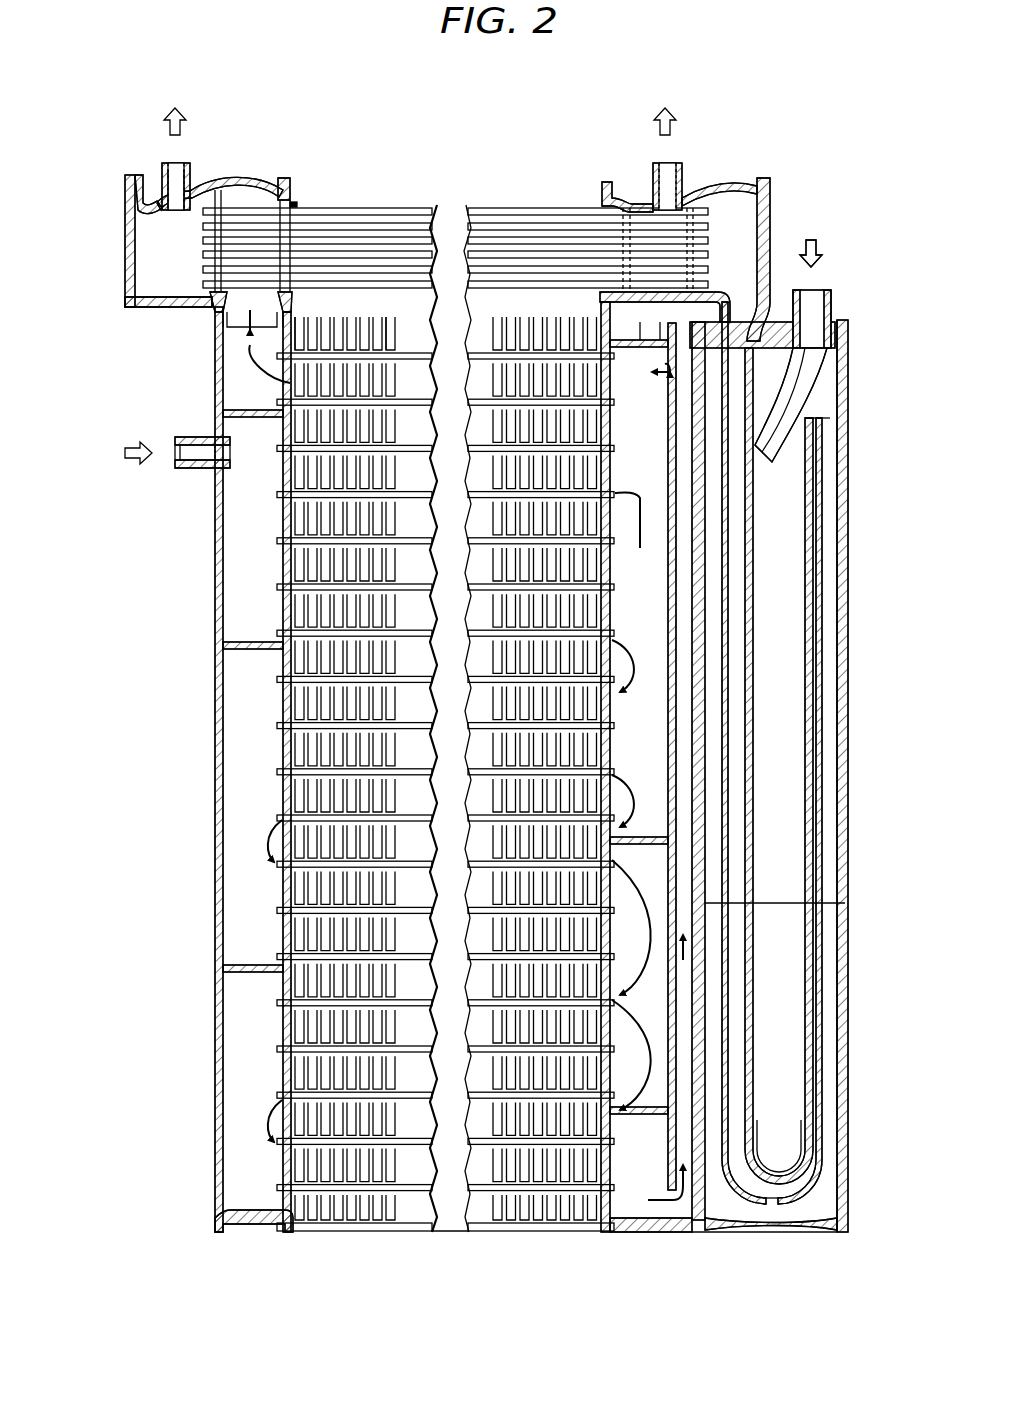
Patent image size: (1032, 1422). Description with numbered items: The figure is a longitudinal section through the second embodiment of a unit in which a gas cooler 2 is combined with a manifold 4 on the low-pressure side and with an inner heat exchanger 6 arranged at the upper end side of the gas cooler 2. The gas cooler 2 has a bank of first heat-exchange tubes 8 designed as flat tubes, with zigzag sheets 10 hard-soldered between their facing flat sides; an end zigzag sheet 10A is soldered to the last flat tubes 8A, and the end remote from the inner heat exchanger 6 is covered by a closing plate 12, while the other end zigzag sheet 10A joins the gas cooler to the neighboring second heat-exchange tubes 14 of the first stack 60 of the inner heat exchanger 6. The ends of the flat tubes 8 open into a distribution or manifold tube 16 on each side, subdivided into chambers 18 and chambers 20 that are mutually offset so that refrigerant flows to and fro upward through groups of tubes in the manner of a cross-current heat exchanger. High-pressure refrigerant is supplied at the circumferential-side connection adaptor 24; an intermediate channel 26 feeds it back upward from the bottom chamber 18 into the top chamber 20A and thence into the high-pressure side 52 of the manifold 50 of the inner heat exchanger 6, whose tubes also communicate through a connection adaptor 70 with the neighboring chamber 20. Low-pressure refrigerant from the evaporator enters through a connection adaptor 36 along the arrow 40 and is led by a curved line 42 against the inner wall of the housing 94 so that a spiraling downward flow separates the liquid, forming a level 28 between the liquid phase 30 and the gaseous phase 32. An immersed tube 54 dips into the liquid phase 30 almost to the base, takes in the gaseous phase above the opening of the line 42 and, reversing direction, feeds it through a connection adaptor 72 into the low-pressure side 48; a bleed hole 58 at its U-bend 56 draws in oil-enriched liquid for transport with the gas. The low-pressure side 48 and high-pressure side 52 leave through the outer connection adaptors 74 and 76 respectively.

The gas cooler 2 is at (438, 1248).
The manifold on the low-pressure side 4 is at (866, 712).
The inner heat exchanger 6 is at (440, 175).
The first stack 60 is at (441, 176).
The first heat-exchange tubes 8 is at (492, 865).
The last flat tubes on the end sides 8A is at (418, 360).
The zigzag sheets 10 is at (345, 1172).
The zigzag sheet on the end side 10A is at (373, 330).
The closing plate 12 is at (527, 1233).
The second heat-exchange tubes 14 is at (510, 232).
The distribution or manifold tube 16 is at (240, 791).
The chambers 18 is at (651, 777).
The chambers 20 is at (253, 759).
The top chamber 20A is at (253, 391).
The circumferential-side connection adaptor 24 is at (192, 462).
The intermediate channel 26 is at (705, 603).
The level 28 is at (840, 903).
The liquid phase 30 is at (779, 1103).
The gaseous phase 32 is at (756, 753).
The connection adaptor 36 is at (831, 303).
The arrow 40 is at (822, 257).
The curved line 42 is at (805, 401).
The low-pressure side 48 is at (447, 258).
The manifold of the inner heat exchanger 50 is at (120, 302).
The high-pressure side 52 is at (240, 195).
The immersed tube 54 is at (830, 806).
The U-bend 56 is at (825, 1193).
The bleed hole 58 is at (767, 1210).
The connection adaptor 70 is at (220, 330).
The connection adaptor 72 is at (745, 359).
The outer connection adaptor 74 is at (163, 186).
The outer connection adaptor 76 is at (672, 183).
The housing 94 is at (850, 609).